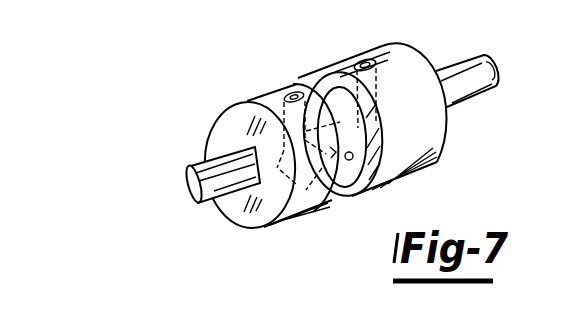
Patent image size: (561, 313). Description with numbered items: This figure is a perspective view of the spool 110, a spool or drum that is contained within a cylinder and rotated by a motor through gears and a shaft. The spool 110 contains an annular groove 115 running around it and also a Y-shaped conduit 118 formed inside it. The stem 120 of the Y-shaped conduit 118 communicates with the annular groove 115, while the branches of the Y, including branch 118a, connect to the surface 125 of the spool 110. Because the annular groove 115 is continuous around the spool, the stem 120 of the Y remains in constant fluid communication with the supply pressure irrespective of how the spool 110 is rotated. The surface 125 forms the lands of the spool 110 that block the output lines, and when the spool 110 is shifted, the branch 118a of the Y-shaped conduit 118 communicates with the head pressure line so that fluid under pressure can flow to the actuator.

The spool 110 is at (436, 163).
The annular groove 115 is at (361, 212).
The Y-shaped conduit 118 is at (292, 133).
The branch of the Y-shaped conduit 118a is at (377, 64).
The stem 120 is at (292, 230).
The surface 125 is at (321, 162).